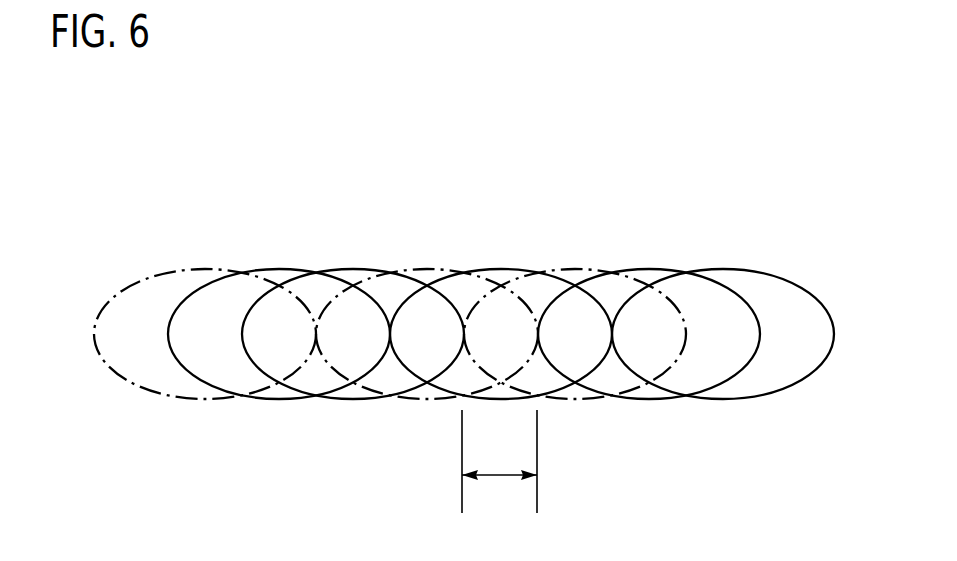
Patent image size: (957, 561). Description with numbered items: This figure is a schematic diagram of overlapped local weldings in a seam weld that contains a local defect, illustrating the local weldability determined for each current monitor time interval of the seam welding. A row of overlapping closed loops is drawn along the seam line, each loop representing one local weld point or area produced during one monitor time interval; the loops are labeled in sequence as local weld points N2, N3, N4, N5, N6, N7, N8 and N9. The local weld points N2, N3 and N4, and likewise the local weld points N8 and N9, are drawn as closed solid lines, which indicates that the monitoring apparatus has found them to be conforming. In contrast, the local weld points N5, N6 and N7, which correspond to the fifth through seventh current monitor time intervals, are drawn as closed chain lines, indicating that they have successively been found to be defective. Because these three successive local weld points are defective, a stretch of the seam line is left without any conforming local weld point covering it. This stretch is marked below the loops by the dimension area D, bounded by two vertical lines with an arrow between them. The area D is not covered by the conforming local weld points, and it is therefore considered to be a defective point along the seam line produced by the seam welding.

The local weld point N2 is at (195, 268).
The local weld point N3 is at (260, 268).
The local weld point N4 is at (338, 268).
The local weld point N5 is at (425, 268).
The local weld point N6 is at (493, 268).
The local weld point N7 is at (587, 268).
The local weld point N8 is at (650, 268).
The local weld point N9 is at (737, 268).
The area not covered by conforming local weld points D is at (499, 462).